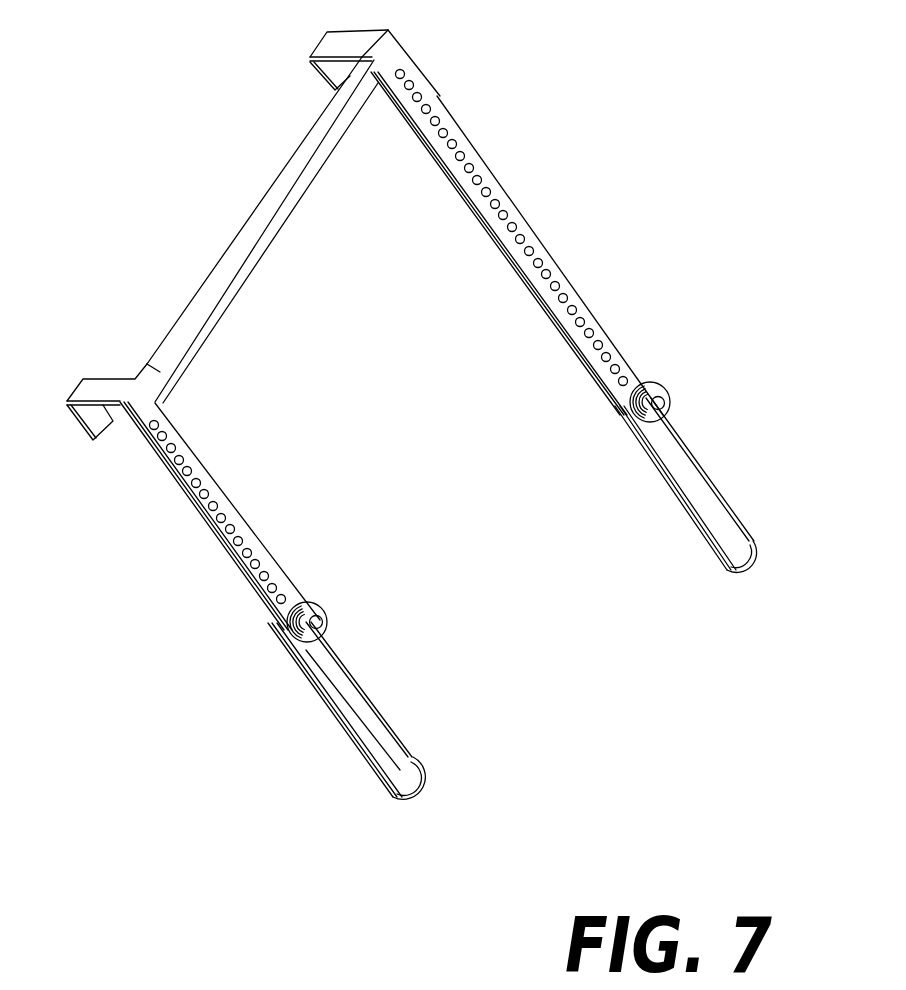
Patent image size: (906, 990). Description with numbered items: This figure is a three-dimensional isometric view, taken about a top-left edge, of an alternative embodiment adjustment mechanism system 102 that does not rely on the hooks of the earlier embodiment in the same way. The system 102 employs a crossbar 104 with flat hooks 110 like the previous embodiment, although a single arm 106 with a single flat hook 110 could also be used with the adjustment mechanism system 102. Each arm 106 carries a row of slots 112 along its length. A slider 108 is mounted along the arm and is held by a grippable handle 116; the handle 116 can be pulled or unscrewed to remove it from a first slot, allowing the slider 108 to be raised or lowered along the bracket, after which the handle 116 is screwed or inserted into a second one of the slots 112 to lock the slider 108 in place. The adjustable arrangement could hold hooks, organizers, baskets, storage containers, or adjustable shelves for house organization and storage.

The adjustment mechanism system 102 is at (140, 100).
The crossbar 104 is at (207, 290).
The arm 106 is at (391, 330).
The slider 108 is at (710, 538).
The flat hook 110 is at (360, 52).
The slots 112 is at (563, 297).
The grippable handle 116 is at (630, 418).